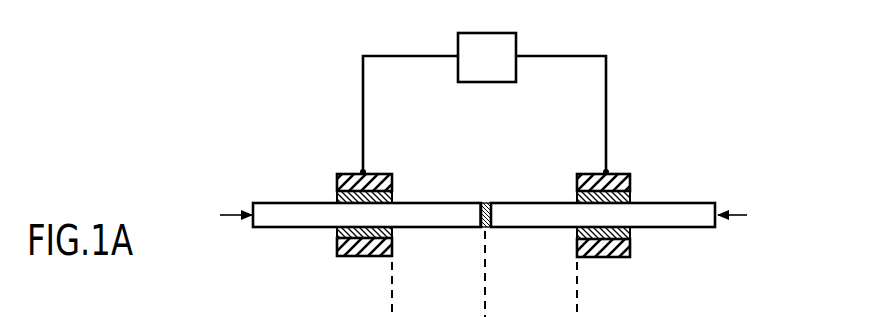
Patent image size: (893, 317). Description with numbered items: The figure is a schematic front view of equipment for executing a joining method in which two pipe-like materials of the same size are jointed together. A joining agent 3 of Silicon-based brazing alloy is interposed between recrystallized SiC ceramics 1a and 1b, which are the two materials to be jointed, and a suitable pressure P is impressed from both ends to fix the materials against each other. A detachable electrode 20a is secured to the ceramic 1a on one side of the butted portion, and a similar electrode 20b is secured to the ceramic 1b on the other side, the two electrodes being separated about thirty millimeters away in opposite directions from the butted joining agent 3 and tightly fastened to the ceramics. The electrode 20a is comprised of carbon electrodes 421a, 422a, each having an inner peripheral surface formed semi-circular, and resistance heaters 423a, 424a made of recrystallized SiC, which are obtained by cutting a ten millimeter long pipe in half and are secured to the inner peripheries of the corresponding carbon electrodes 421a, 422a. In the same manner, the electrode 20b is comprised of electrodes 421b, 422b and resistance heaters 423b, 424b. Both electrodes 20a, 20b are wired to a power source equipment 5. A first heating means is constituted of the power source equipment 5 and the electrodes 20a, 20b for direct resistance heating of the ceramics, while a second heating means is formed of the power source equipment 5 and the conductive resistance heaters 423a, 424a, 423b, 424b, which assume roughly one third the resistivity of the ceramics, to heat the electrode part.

The recrystallized SiC ceramic 1a is at (436, 207).
The recrystallized SiC ceramic 1b is at (521, 213).
The joining agent 3 is at (485, 203).
The power source equipment 5 is at (513, 49).
The electrode 20a is at (315, 200).
The electrode 20b is at (638, 199).
The carbon electrode 421a is at (340, 176).
The carbon electrode 421b is at (618, 175).
The carbon electrode 422a is at (348, 258).
The carbon electrode 422b is at (605, 257).
The resistance heater 423a is at (338, 198).
The resistance heater 423b is at (630, 200).
The resistance heater 424a is at (337, 235).
The resistance heater 424b is at (628, 232).
The pressure P is at (481, 216).